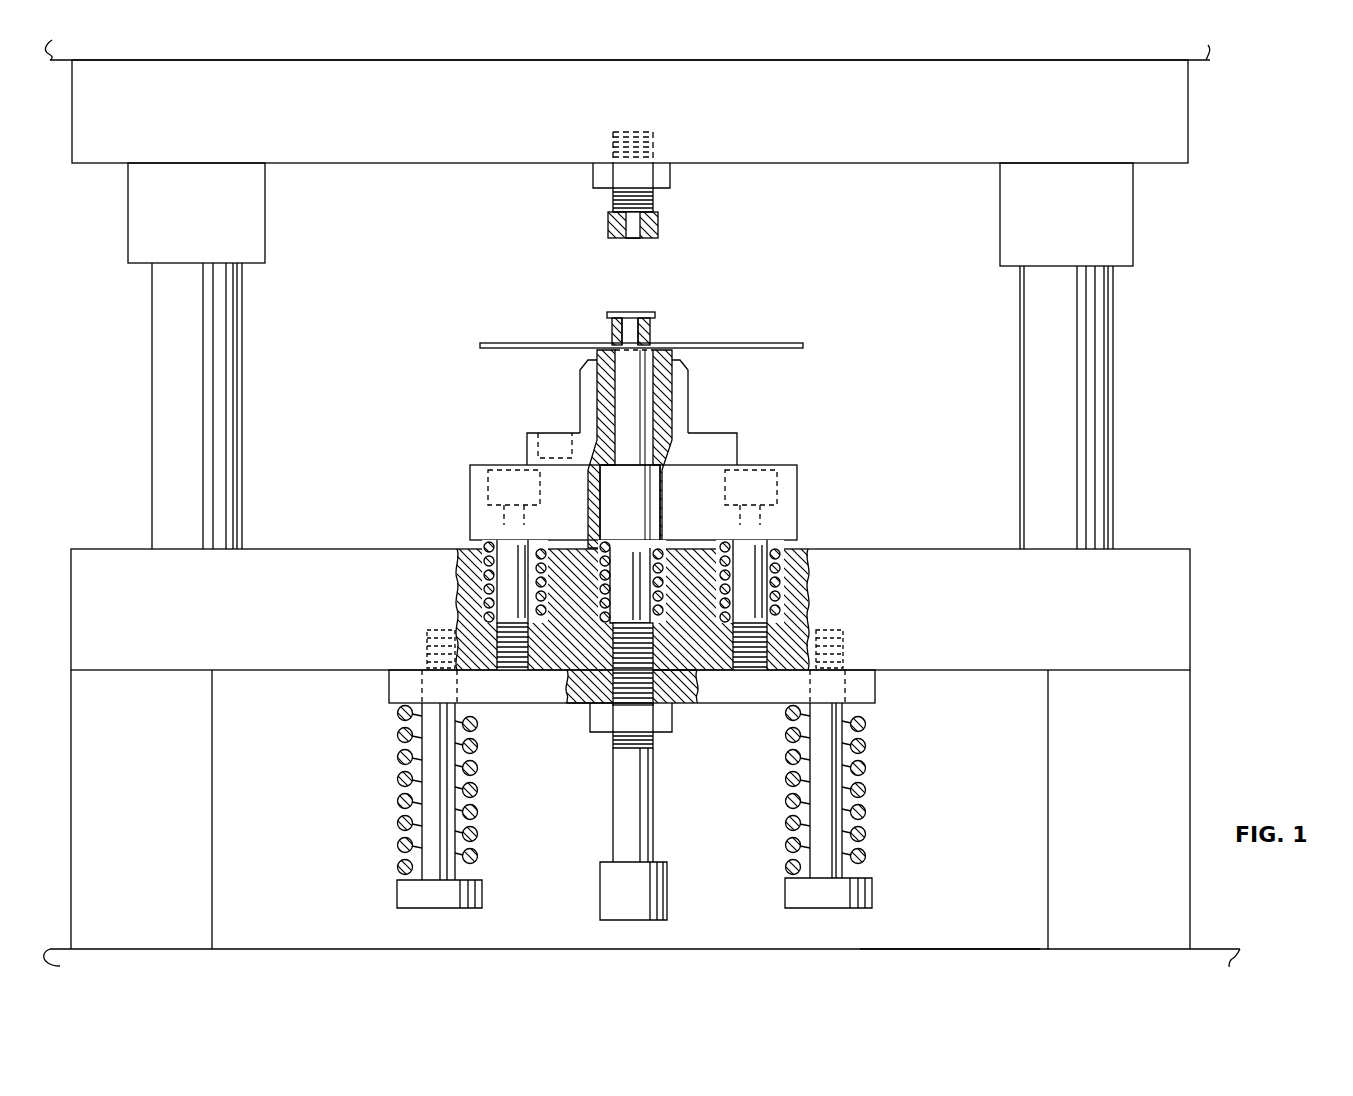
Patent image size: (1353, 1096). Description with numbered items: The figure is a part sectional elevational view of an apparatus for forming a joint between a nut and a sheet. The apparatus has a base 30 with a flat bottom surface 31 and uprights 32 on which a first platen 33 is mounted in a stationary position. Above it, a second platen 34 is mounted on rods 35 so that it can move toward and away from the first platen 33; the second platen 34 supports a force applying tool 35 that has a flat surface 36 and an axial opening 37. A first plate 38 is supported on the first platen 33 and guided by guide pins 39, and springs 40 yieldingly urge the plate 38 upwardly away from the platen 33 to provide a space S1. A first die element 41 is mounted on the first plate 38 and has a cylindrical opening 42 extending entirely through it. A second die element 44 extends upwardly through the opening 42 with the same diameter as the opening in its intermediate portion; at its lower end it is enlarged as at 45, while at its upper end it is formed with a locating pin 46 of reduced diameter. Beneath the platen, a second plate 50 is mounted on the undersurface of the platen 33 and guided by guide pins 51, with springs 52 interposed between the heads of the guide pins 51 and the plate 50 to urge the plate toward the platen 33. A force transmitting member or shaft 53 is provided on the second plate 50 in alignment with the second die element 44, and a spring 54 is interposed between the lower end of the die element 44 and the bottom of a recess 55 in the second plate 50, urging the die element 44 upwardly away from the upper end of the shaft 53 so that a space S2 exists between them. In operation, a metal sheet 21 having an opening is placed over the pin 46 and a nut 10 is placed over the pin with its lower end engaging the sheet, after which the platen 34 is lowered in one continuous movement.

The nut 10 is at (660, 310).
The metal sheet 21 is at (768, 344).
The base 30 is at (915, 962).
The flat bottom surface 31 is at (985, 950).
The uprights 32 is at (200, 738).
The first platen 33 is at (981, 660).
The second platen 34 is at (901, 150).
The rods 35 is at (669, 209).
The flat surface 36 is at (650, 238).
The axial opening 37 is at (630, 238).
The first plate 38 is at (800, 495).
The guide pins 39 is at (505, 573).
The springs 40 is at (486, 604).
The first die element 41 is at (712, 437).
The cylindrical opening 42 is at (665, 393).
The second die element 44 is at (618, 392).
The enlarged lower end 45 is at (630, 506).
The locating pin 46 is at (652, 332).
The second plate 50 is at (877, 690).
The guide pins 51 is at (428, 791).
The springs 52 is at (405, 827).
The force transmitting member 53 is at (650, 795).
The spring 54 is at (603, 640).
The recess 55 is at (653, 658).
The space S1 is at (800, 538).
The space S2 is at (701, 540).